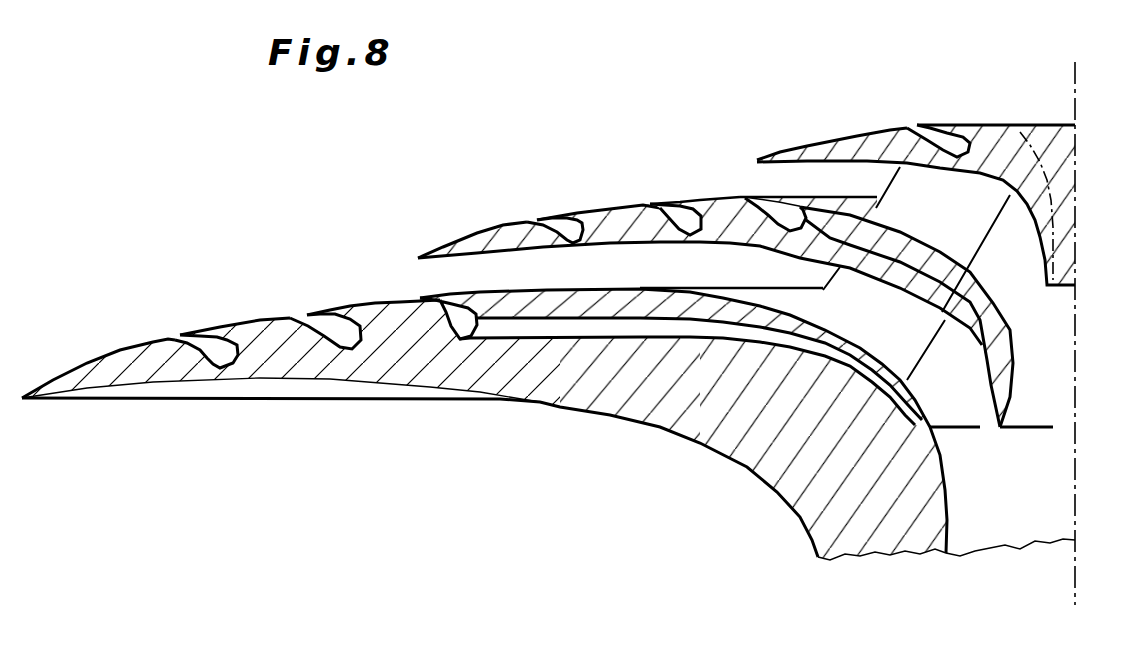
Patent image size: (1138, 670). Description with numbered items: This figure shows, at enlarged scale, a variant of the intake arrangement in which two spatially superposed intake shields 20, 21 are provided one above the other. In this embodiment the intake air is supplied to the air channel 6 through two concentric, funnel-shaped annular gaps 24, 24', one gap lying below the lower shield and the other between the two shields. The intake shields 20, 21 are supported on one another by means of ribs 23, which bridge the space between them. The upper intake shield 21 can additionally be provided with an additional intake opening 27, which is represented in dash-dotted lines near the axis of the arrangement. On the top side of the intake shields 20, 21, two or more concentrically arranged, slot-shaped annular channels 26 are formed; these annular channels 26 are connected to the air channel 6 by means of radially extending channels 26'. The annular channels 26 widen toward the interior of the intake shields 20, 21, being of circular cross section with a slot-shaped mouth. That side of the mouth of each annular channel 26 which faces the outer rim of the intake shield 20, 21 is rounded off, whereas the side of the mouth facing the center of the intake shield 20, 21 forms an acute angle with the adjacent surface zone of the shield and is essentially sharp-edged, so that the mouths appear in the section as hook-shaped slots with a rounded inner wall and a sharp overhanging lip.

The air channel 6 is at (1007, 518).
The intake shield 20 is at (425, 368).
The intake shield 21 is at (483, 240).
The ribs 23 is at (925, 195).
The annular gap 24 is at (384, 237).
The annular gap 24' is at (730, 137).
The annular channels 26 is at (566, 244).
The radially extending channels 26' is at (691, 417).
The additional intake opening 27 is at (1045, 118).